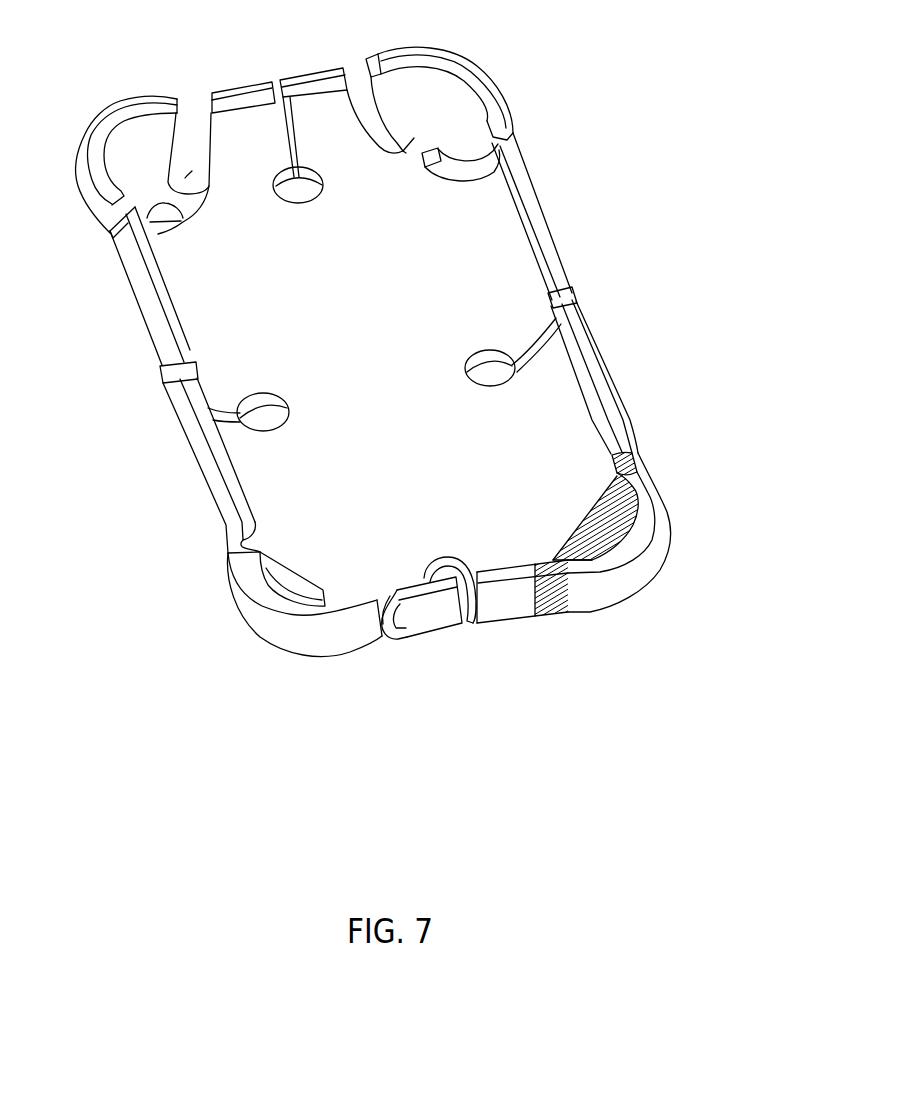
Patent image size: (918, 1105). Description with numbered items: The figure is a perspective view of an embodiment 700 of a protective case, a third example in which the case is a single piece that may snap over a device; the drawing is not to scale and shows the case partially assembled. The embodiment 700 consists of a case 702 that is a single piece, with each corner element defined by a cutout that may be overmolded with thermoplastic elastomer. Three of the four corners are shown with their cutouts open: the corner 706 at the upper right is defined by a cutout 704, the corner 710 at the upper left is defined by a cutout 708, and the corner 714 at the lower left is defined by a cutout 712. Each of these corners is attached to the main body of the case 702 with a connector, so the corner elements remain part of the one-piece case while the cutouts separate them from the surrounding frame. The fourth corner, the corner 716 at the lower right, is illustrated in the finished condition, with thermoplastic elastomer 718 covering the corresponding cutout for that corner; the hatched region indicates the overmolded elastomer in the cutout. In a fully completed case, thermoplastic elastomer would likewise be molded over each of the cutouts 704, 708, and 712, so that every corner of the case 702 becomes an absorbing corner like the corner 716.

The embodiment 700 is at (244, 695).
The case 702 is at (545, 242).
The cutout 704 is at (382, 138).
The corner 706 is at (496, 81).
The cutout 708 is at (188, 179).
The corner 710 is at (91, 135).
The cutout 712 is at (387, 627).
The corner 714 is at (287, 640).
The corner 716 is at (645, 573).
The thermoplastic elastomer 718 is at (638, 462).